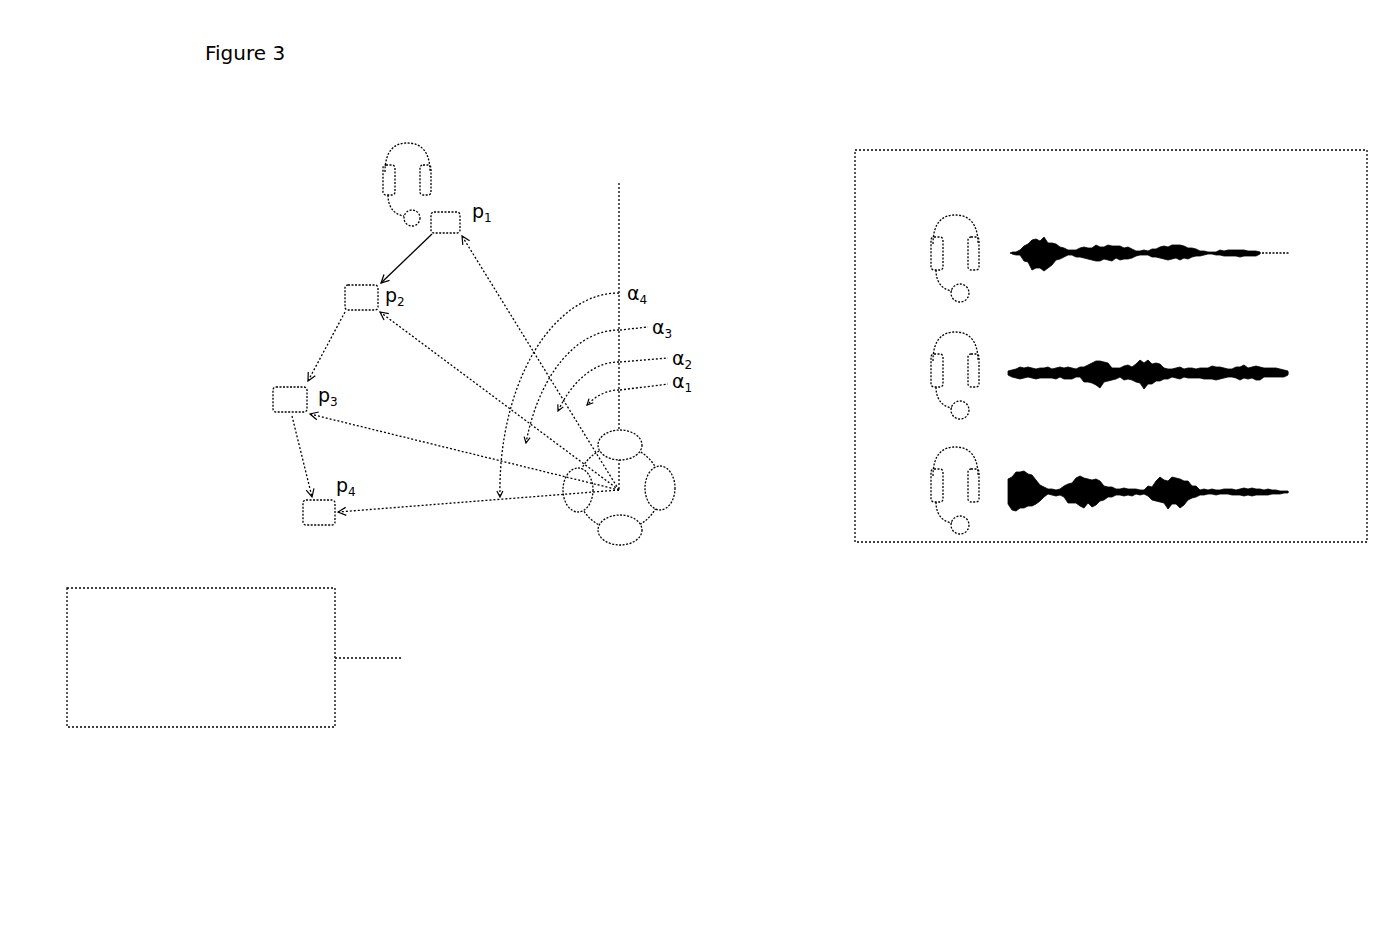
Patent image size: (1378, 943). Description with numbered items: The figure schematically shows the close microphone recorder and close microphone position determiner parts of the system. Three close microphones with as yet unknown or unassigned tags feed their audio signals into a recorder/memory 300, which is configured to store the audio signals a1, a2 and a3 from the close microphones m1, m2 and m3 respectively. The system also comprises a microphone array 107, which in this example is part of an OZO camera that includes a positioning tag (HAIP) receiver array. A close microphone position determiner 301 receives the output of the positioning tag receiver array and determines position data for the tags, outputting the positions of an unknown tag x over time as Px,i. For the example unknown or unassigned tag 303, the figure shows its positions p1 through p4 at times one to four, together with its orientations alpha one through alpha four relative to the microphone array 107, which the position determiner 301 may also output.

The unknown or unassigned tag 303 is at (432, 146).
The microphone array 107 is at (677, 490).
The recorder/memory 300 is at (1111, 346).
The close microphone position determiner 301 is at (235, 657).